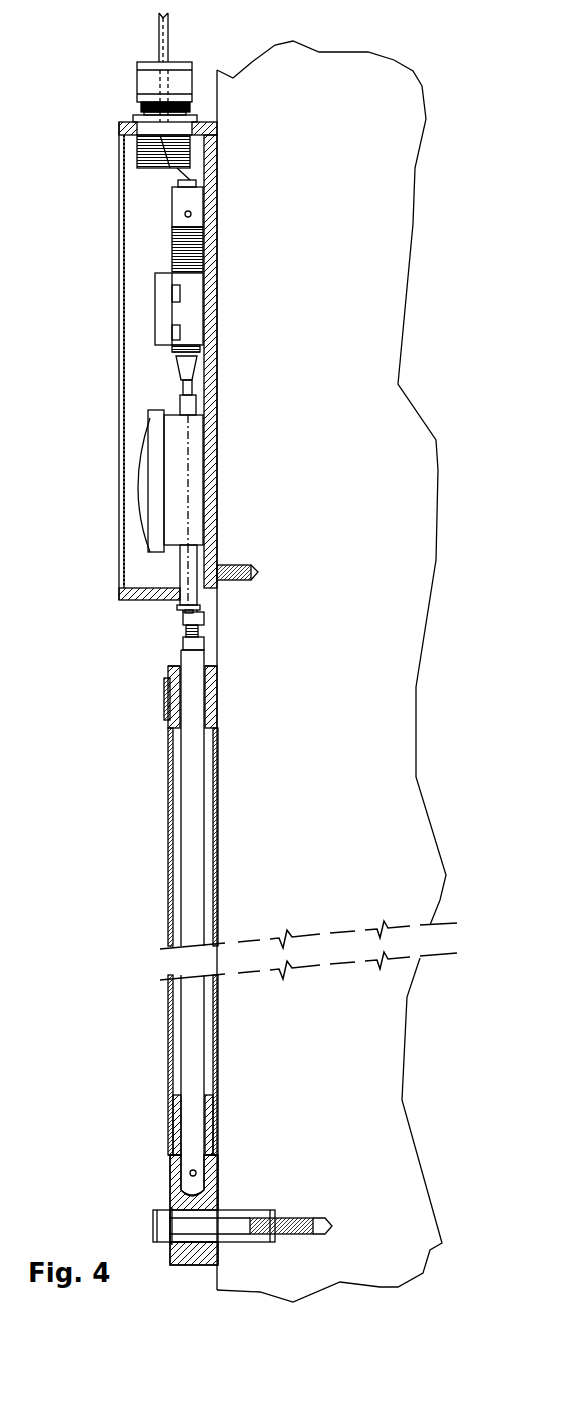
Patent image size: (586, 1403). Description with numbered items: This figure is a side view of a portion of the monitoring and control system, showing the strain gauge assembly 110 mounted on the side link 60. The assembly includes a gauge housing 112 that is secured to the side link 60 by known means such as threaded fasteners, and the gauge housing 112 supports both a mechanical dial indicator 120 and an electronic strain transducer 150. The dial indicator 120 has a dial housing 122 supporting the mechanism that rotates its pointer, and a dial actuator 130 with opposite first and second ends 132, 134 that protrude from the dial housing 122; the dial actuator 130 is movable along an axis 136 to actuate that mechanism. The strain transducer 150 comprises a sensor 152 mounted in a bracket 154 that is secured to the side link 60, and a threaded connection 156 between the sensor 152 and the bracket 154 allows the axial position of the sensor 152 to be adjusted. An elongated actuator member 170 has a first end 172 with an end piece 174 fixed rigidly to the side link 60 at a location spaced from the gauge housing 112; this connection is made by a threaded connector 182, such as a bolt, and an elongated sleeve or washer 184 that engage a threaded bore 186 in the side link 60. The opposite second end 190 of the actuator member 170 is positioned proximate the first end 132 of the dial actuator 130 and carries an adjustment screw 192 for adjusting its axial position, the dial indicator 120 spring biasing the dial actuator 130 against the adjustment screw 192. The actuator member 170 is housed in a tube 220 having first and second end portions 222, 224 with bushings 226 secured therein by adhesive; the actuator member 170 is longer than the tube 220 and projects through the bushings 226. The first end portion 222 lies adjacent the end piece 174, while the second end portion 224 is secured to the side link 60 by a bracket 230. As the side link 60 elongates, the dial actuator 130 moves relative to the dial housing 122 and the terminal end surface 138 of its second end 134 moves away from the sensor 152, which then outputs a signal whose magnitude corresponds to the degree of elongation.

The side link 60 is at (300, 80).
The strain gauge assembly 110 is at (90, 178).
The gauge housing 112 is at (210, 213).
The dial indicator 120 is at (175, 442).
The dial housing 122 is at (182, 465).
The dial actuator 130 is at (190, 575).
The first end of dial actuator 132 is at (197, 608).
The second end of dial actuator 134 is at (192, 368).
The axis 136 is at (190, 510).
The terminal end surface 138 is at (175, 350).
The strain transducer 150 is at (125, 248).
The sensor 152 is at (175, 212).
The bracket 154 is at (168, 296).
The threaded connection 156 is at (205, 252).
The actuator member 170 is at (193, 893).
The first end of actuator member 172 is at (192, 1160).
The end piece 174 is at (218, 1190).
The threaded connector 182 is at (157, 1226).
The elongated sleeve 184 is at (232, 1240).
The threaded bore 186 is at (252, 1208).
The second end of actuator member 190 is at (197, 660).
The adjustment screw 192 is at (186, 620).
The tube 220 is at (170, 790).
The first end portion of tube 222 is at (178, 1128).
The second end portion of tube 224 is at (172, 722).
The bushings 226 is at (207, 690).
The bracket 230 is at (164, 700).